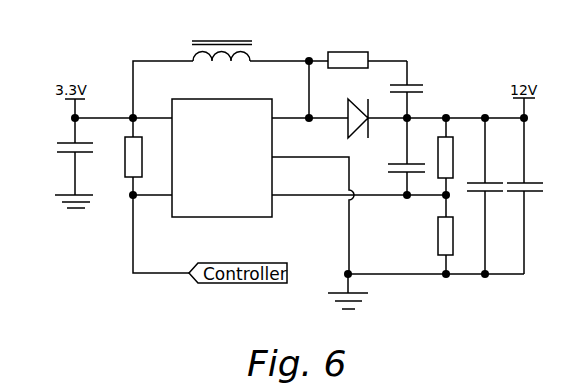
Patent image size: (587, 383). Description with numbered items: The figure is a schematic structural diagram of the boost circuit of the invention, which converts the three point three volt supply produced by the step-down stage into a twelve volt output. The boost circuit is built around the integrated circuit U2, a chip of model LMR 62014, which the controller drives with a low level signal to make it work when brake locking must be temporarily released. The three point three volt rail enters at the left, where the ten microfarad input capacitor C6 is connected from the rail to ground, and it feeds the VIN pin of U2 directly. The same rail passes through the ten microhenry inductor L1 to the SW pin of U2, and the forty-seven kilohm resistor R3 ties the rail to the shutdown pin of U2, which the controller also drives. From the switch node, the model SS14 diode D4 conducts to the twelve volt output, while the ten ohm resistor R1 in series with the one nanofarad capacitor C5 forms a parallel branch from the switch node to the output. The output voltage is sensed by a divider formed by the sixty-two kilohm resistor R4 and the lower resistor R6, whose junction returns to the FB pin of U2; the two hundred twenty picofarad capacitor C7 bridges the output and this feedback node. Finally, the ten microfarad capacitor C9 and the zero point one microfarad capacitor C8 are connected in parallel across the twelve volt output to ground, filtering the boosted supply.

The boost converter chip U2 is at (222, 147).
The inductor L1 is at (222, 39).
The input capacitor C6 is at (62, 163).
The resistor R3 is at (137, 156).
The resistor R1 is at (358, 48).
The capacitor C5 is at (417, 89).
The diode D4 is at (342, 118).
The capacitor C7 is at (396, 156).
The feedback resistor R4 is at (458, 156).
The feedback resistor R6 is at (459, 234).
The output capacitor C9 is at (487, 196).
The output capacitor C8 is at (527, 196).